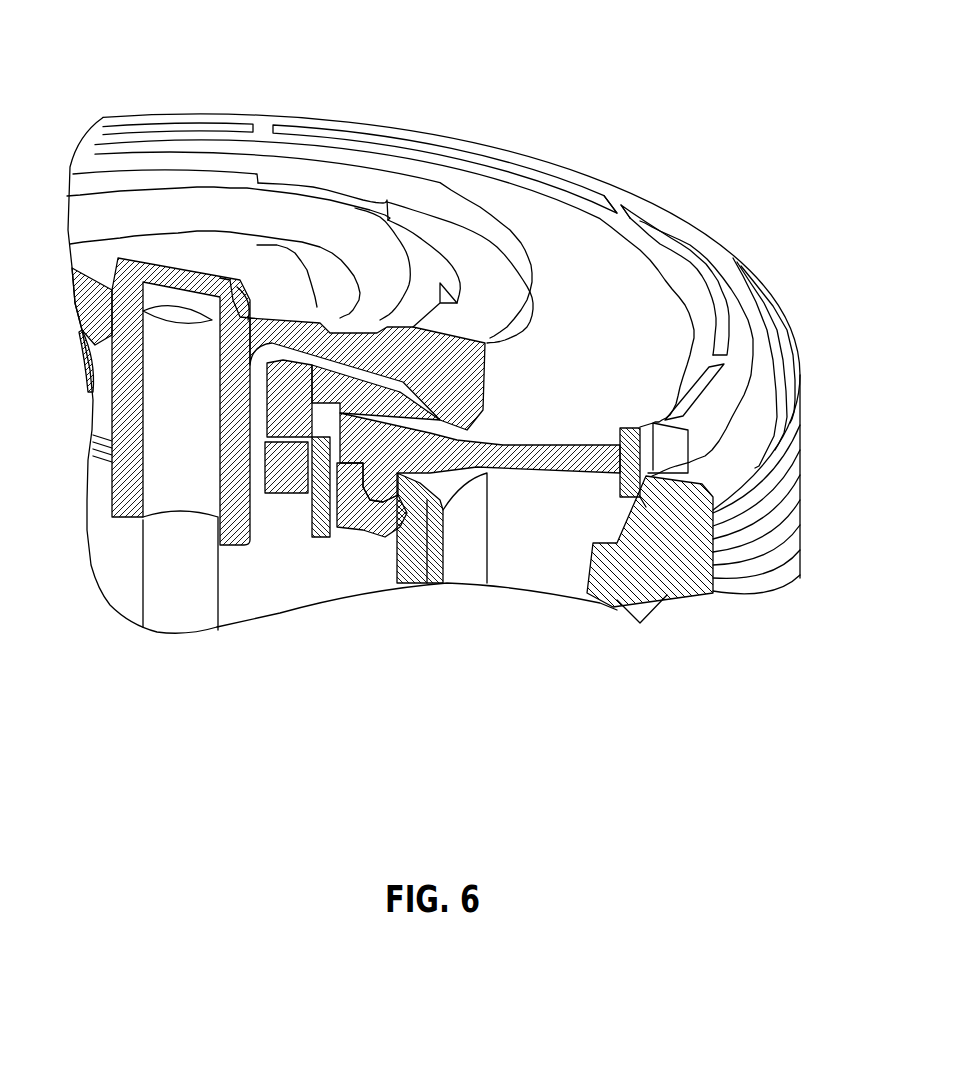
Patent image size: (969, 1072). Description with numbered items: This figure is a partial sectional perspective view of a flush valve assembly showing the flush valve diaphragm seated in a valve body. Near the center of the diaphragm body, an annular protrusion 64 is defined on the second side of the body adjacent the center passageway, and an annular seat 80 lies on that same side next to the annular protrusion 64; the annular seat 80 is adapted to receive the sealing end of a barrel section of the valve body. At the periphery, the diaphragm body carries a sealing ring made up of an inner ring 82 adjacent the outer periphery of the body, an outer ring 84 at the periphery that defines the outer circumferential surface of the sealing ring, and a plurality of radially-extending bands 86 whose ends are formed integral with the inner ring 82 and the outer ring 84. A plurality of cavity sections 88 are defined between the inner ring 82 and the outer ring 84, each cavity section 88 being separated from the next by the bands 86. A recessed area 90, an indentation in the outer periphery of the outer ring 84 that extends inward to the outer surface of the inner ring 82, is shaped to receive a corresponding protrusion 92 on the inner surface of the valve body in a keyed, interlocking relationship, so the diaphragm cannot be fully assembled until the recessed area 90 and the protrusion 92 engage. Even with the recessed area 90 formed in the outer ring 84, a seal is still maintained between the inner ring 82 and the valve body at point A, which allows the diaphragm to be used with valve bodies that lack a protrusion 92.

The annular protrusion 64 is at (383, 505).
The annular seat 80 is at (423, 585).
The inner ring 82 is at (652, 242).
The outer ring 84 is at (537, 163).
The radially-extending bands 86 is at (650, 238).
The cavity sections 88 is at (708, 277).
The recessed area 90 is at (672, 453).
The protrusion 92 is at (663, 472).
The point A is at (637, 507).